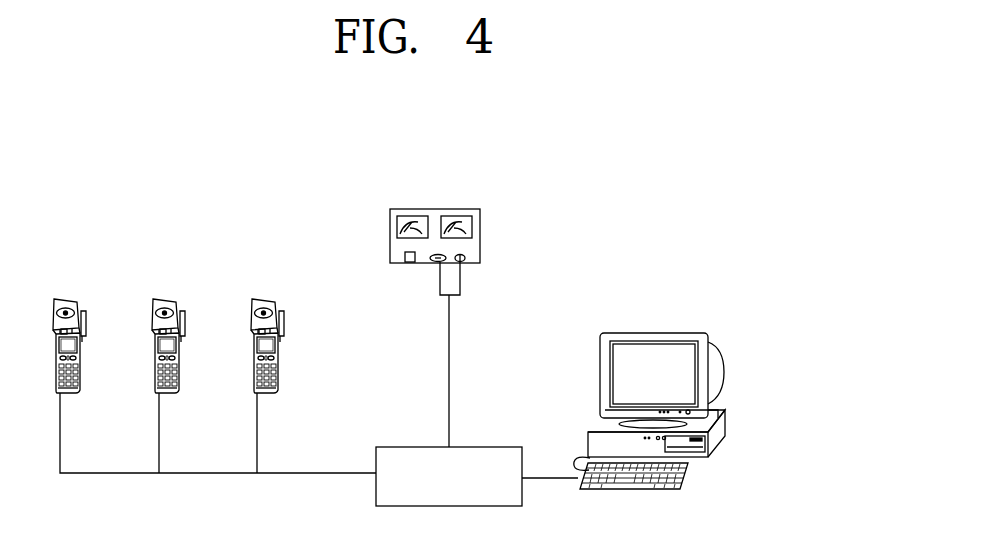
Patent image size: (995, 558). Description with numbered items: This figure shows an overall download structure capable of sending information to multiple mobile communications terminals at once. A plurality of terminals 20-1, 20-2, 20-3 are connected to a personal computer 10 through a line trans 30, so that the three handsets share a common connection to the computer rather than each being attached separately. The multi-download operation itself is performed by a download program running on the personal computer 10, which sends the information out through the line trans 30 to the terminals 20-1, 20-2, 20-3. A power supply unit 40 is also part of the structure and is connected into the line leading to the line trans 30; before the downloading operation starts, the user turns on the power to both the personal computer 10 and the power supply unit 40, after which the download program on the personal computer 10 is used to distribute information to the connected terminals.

The personal computer 10 is at (652, 332).
The mobile communications terminal 20-1 is at (64, 299).
The mobile communications terminal 20-2 is at (163, 299).
The mobile communications terminal 20-3 is at (262, 299).
The line trans 30 is at (414, 446).
The power supply unit 40 is at (434, 208).